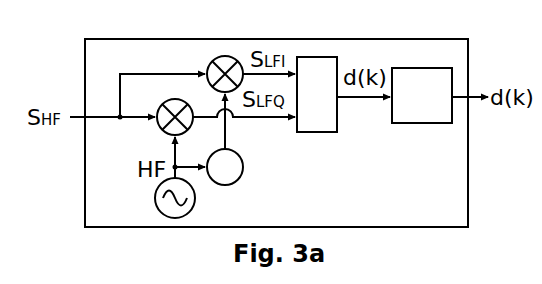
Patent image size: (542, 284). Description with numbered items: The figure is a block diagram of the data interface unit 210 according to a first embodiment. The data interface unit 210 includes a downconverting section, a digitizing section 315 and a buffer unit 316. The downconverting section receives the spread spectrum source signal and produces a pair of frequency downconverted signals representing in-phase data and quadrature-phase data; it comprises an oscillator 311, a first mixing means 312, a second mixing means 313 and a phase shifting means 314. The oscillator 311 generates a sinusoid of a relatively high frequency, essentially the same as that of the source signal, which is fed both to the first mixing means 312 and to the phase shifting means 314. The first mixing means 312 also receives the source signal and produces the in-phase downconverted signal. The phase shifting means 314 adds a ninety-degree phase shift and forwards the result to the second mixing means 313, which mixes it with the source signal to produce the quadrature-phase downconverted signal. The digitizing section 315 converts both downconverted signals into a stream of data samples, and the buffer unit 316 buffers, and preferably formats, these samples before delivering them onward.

The data interface unit 210 is at (469, 30).
The oscillator 311 is at (156, 195).
The first mixing means 312 is at (161, 133).
The second mixing means 313 is at (209, 65).
The phase shifting means 314 is at (229, 185).
The digitizing section 315 is at (316, 133).
The buffer unit 316 is at (421, 124).